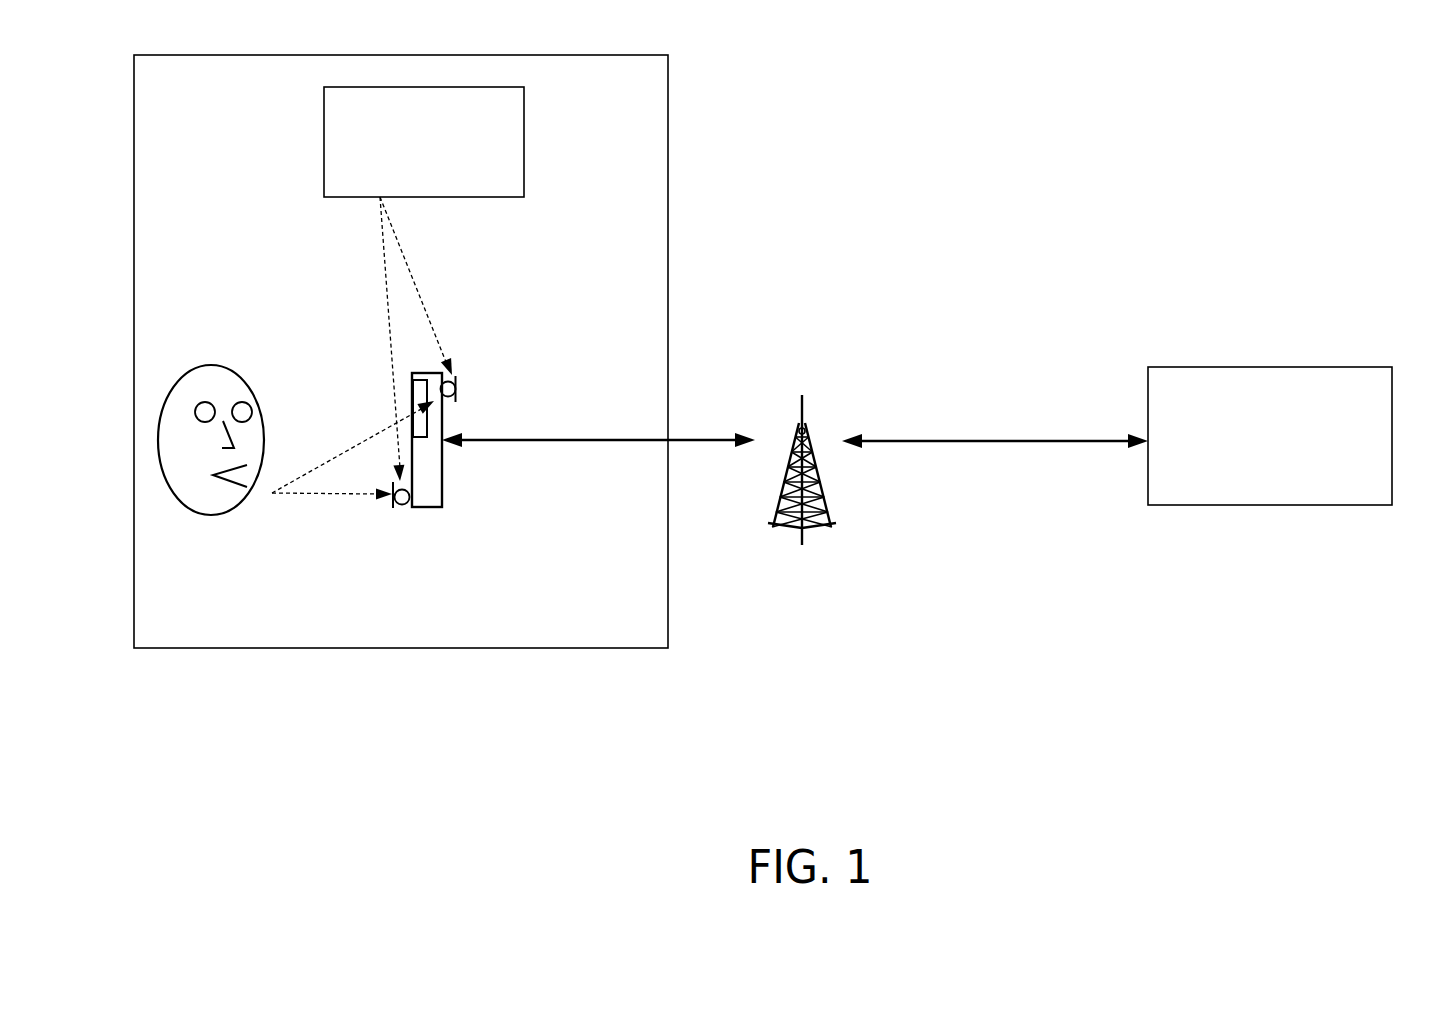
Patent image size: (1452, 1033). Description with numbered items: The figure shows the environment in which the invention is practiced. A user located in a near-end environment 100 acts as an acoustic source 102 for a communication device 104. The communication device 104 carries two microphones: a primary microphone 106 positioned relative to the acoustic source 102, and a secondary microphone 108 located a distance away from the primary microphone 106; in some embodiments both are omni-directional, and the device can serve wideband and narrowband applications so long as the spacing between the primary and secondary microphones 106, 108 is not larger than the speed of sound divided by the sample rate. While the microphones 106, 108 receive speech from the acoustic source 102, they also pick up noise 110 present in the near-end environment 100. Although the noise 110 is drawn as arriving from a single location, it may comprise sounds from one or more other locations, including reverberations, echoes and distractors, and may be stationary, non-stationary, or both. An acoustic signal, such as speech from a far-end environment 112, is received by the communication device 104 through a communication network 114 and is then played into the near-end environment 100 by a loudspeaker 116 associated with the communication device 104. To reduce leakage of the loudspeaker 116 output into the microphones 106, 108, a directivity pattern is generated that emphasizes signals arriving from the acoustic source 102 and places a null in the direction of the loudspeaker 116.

The near-end environment 100 is at (238, 154).
The acoustic source 102 is at (290, 584).
The communication device 104 is at (444, 483).
The primary microphone 106 is at (408, 508).
The secondary microphone 108 is at (456, 388).
The noise 110 is at (401, 169).
The far-end environment 112 is at (1249, 462).
The communication network 114 is at (802, 553).
The loudspeaker 116 is at (412, 400).